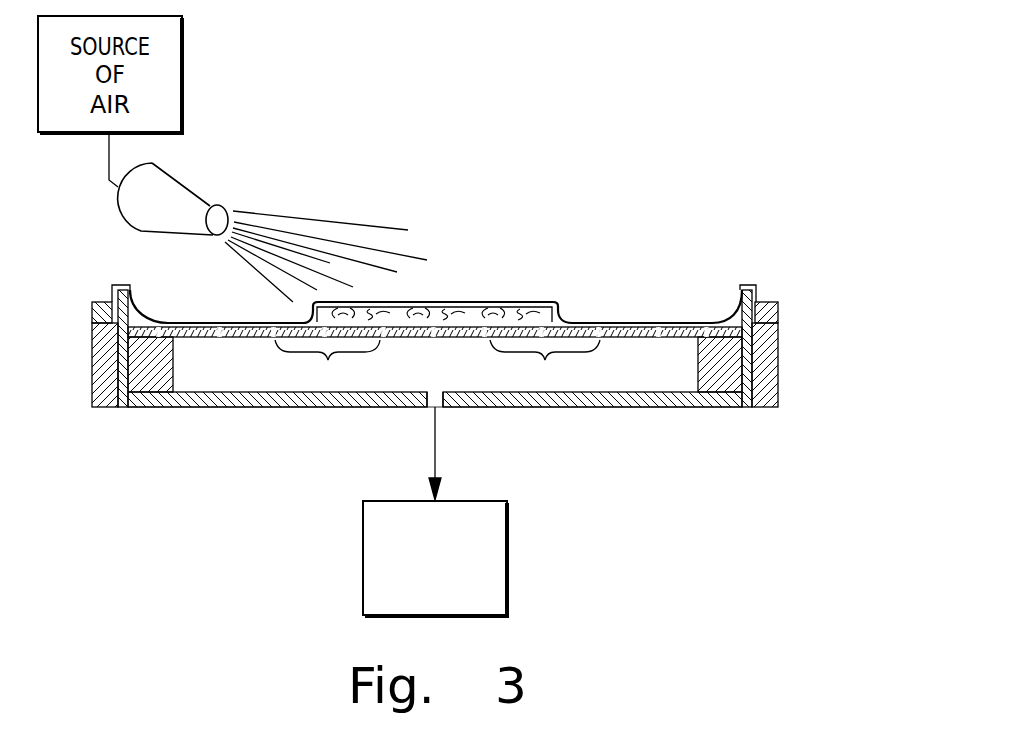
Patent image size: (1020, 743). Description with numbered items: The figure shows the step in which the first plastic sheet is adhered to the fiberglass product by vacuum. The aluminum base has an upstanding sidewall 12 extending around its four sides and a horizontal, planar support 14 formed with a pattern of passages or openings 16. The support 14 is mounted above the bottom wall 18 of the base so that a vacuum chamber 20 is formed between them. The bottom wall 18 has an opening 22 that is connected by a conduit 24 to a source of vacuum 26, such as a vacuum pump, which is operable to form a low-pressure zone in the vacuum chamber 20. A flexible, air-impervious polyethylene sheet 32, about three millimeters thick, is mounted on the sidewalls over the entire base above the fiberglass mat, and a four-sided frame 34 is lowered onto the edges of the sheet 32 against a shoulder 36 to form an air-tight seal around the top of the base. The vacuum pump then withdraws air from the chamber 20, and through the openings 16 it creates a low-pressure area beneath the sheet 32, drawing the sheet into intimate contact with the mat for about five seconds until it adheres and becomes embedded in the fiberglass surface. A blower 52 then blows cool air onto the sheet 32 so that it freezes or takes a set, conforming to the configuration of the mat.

The upstanding sidewall 12 is at (752, 368).
The horizontal planar support 14 is at (630, 326).
The passages or openings 16 is at (437, 366).
The bottom wall 18 is at (334, 408).
The vacuum chamber 20 is at (447, 372).
The opening 22 is at (443, 408).
The conduit 24 is at (433, 460).
The source of vacuum 26 is at (363, 535).
The polyethylene sheet 32 is at (527, 302).
The four-sided frame 34 is at (777, 310).
The shoulder 36 is at (779, 336).
The blower 52 is at (195, 186).